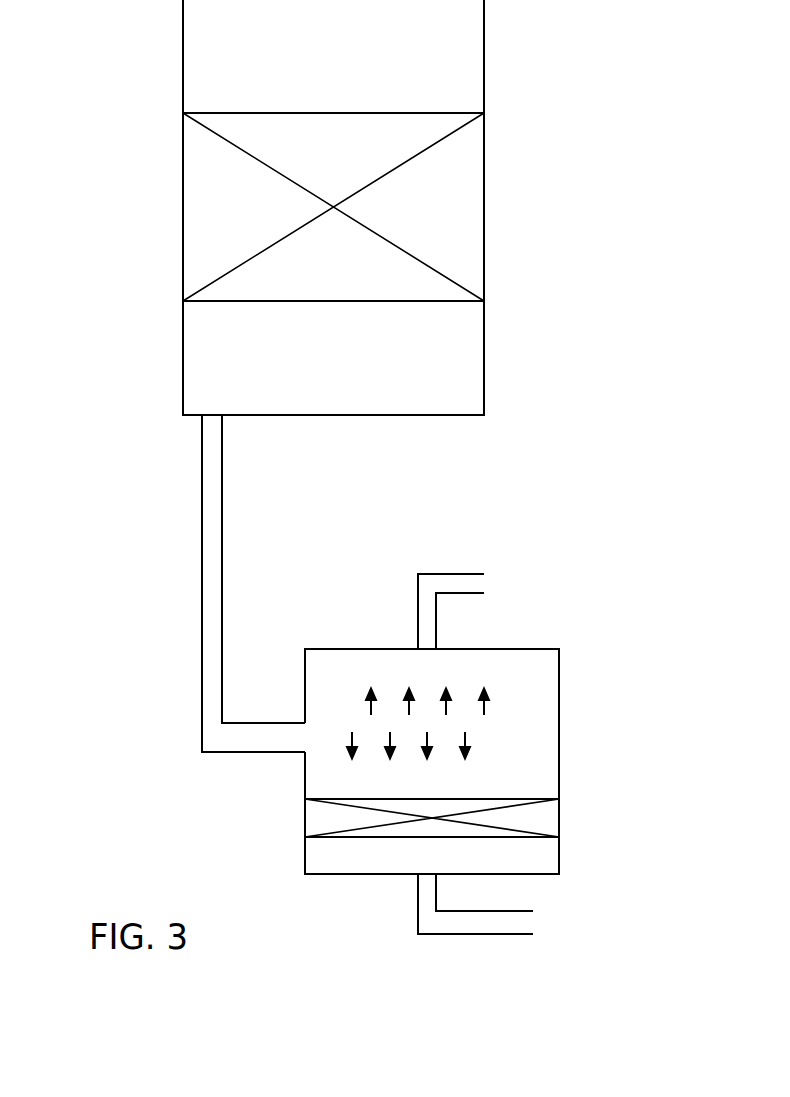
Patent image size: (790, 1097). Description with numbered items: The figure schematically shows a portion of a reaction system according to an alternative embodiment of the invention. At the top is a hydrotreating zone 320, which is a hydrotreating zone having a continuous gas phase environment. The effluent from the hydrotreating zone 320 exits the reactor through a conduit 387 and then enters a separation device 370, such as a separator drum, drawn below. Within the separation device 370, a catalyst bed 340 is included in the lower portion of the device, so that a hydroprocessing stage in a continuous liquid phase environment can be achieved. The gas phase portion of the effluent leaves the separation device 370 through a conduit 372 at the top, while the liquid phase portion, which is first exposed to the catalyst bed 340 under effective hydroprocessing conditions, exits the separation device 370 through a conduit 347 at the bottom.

The hydrotreating zone 320 is at (511, 241).
The conduit 387 is at (157, 615).
The separation device 370 is at (587, 706).
The catalyst bed 340 is at (579, 827).
The conduit 372 is at (492, 556).
The conduit 347 is at (561, 917).